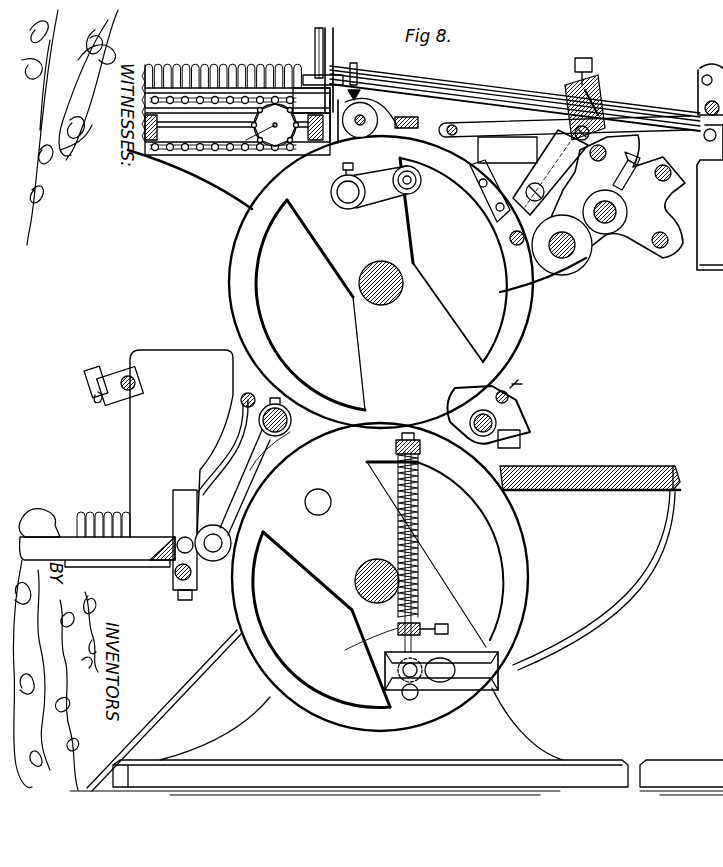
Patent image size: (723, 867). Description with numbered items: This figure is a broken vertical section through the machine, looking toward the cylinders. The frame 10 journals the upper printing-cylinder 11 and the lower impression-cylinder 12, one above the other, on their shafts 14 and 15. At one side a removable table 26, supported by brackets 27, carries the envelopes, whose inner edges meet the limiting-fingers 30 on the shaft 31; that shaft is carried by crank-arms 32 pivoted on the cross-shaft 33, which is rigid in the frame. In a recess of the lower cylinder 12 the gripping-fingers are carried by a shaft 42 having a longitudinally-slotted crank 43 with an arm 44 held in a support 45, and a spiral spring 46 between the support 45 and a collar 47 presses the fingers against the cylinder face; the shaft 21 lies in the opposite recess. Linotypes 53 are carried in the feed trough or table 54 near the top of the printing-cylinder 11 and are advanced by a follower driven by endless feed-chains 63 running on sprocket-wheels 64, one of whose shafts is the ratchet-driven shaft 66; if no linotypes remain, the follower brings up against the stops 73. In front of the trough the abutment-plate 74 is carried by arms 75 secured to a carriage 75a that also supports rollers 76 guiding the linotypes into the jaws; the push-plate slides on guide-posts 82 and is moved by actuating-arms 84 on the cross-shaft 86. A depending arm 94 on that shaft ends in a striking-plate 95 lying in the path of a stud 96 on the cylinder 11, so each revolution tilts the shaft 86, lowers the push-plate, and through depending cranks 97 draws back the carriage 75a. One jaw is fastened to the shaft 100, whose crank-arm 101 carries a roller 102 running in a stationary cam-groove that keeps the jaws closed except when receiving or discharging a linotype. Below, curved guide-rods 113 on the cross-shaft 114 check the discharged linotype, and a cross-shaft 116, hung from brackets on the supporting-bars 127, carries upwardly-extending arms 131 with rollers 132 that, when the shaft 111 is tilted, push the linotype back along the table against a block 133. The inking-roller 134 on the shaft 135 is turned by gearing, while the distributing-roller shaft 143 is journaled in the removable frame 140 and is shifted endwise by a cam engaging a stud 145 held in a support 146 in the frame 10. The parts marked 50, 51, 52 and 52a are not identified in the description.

The frame 10 is at (462, 748).
The printing-cylinder 11 is at (381, 282).
The impression-cylinder 12 is at (380, 577).
The shaft 14 is at (402, 276).
The shaft 15 is at (380, 560).
The shaft 21 is at (325, 494).
The table 26 is at (628, 463).
The brackets 27 is at (638, 570).
The limiting-fingers 30 is at (515, 455).
The shaft 31 is at (510, 400).
The crank-arms 32 is at (500, 418).
The cross-shaft 33 is at (510, 432).
The shaft 42 is at (442, 670).
The longitudinally-slotted crank 43 is at (498, 660).
The arm 44 is at (425, 637).
The support 45 is at (396, 448).
The spiral spring 46 is at (420, 532).
The collar 47 is at (354, 647).
The roller 50 is at (214, 562).
The lever 51 is at (262, 468).
The pivot pin 52 is at (290, 430).
The rod 52a is at (190, 675).
The linotypes 53 is at (246, 72).
The feed trough or table 54 is at (186, 95).
The endless feed-chains 63 is at (185, 157).
The sprocket-wheels 64 is at (250, 142).
The shaft 66 is at (273, 148).
The stops 73 is at (313, 68).
The abutment-plate 74 is at (380, 82).
The arms 75 is at (412, 96).
The carriage 75a is at (410, 128).
The rollers 76 is at (400, 90).
The guide-posts 82 is at (336, 60).
The actuating-arms 84 is at (505, 92).
The cross-shaft 86 is at (572, 99).
The depending arm 94 is at (532, 150).
The striking-plate 95 is at (520, 207).
The stud 96 is at (490, 202).
The depending cranks 97 is at (592, 136).
The shaft 100 is at (346, 207).
The crank-arm 101 is at (397, 200).
The roller 102 is at (418, 190).
The shaft 111 is at (126, 372).
The curved guide-rods 113 is at (232, 442).
The cross-shaft 114 is at (240, 397).
The cross-shaft 116 is at (178, 580).
The supporting-bars 127 is at (100, 376).
The upwardly-extending arms 131 is at (160, 552).
The rollers 132 is at (175, 520).
The block 133 is at (45, 530).
The inking-roller 134 is at (588, 258).
The shaft 135 is at (565, 275).
The frame 140 is at (655, 262).
The shaft 143 is at (612, 242).
The stud 145 is at (648, 182).
The support 146 is at (668, 185).